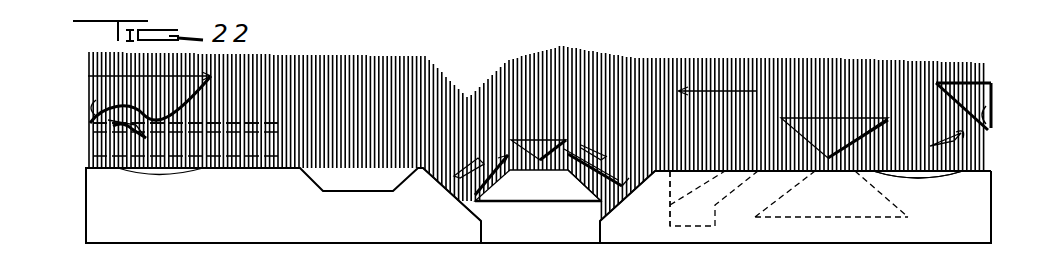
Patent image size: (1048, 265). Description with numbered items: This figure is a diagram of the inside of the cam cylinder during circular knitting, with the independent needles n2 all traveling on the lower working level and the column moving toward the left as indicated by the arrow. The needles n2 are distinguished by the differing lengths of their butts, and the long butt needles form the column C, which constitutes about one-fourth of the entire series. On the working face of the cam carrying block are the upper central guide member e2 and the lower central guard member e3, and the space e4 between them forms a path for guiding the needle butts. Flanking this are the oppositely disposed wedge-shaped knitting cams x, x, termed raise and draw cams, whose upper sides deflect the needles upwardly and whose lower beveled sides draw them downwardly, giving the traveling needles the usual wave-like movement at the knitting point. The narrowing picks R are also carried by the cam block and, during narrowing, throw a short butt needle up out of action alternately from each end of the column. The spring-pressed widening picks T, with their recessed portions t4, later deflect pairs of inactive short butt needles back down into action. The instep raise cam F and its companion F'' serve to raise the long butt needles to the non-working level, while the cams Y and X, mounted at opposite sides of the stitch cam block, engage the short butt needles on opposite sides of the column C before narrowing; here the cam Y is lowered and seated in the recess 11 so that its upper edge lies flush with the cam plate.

The independent needles n2 is at (622, 58).
The recess 11 is at (303, 176).
The upper central guide member e2 is at (528, 152).
The lower central guard member e3 is at (530, 195).
The space e4 is at (578, 180).
The narrowing picks R is at (447, 168).
The knitting cams x is at (447, 193).
The recessed portion t4 is at (110, 118).
The widening picks T is at (106, 125).
The needle/feeler F'' is at (795, 92).
The column of long butt needles C is at (764, 168).
The instep raise cam F is at (848, 199).
The needle raising cam X is at (680, 200).
The needle raising cam Y is at (345, 185).